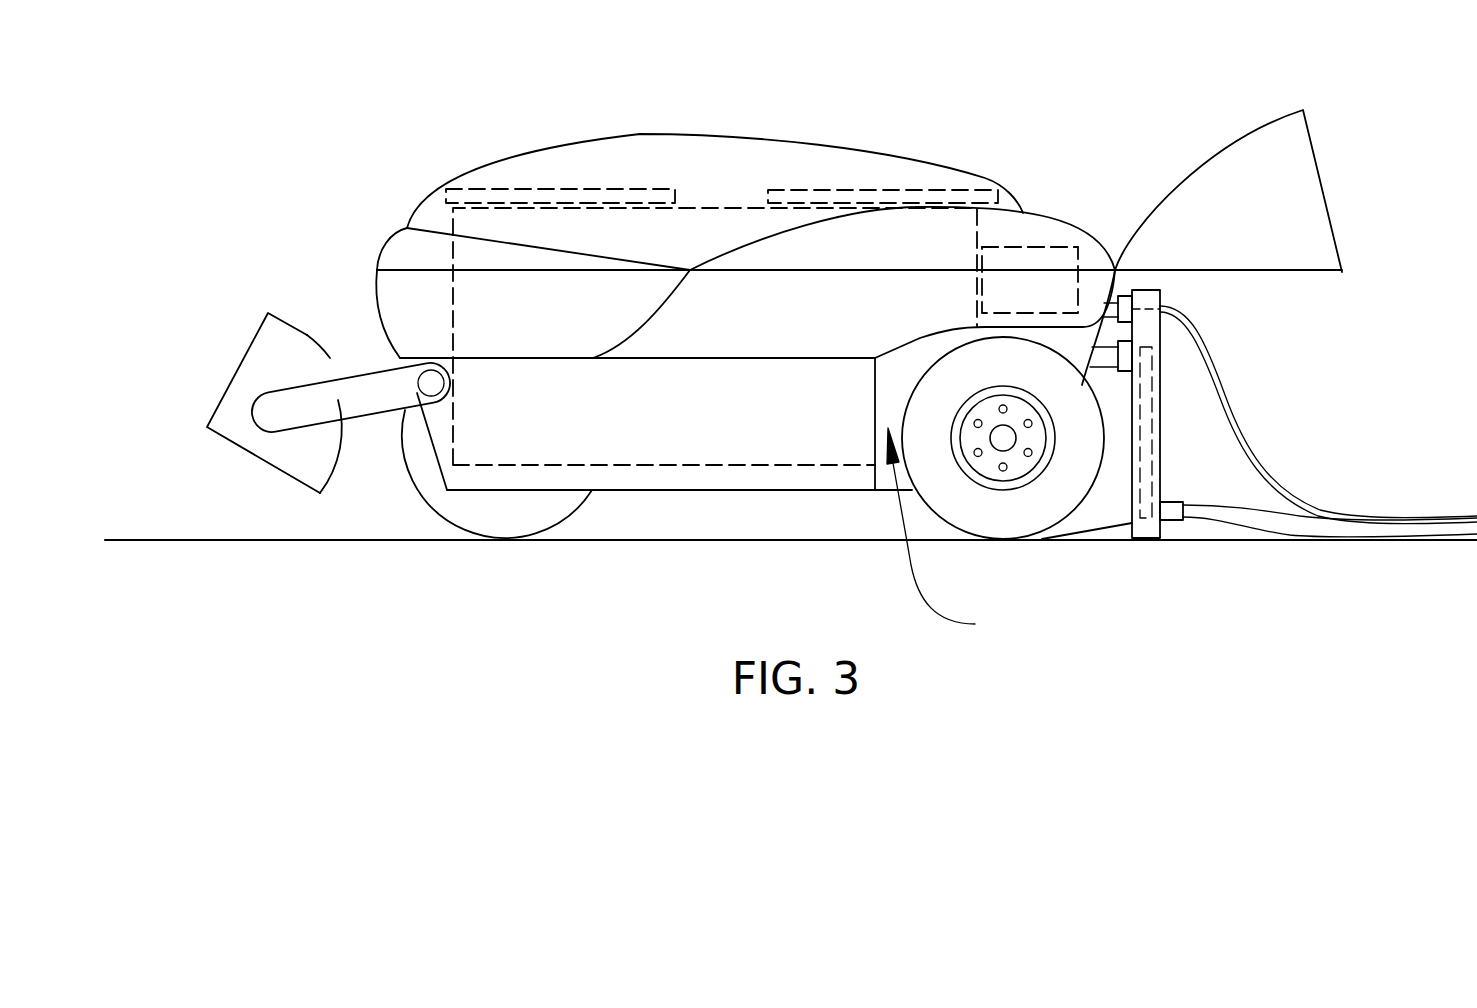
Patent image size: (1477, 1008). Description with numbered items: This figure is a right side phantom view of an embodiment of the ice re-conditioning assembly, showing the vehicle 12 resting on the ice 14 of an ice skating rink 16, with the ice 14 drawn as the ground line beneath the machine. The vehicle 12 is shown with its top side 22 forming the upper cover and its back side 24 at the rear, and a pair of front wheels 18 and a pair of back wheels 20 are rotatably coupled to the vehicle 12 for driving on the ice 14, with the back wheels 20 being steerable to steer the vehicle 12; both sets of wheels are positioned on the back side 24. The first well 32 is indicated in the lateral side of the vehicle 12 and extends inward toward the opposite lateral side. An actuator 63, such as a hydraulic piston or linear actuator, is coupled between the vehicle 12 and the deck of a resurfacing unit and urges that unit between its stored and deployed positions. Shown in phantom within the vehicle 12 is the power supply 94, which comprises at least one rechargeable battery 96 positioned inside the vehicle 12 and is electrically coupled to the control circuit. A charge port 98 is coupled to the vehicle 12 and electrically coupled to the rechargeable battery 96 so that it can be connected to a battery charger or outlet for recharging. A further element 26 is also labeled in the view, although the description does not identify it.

The vehicle 12 is at (1080, 228).
The ice 14 is at (172, 540).
The ice skating rink 16 is at (260, 517).
The front wheels 18 is at (1077, 507).
The back wheels 20 is at (428, 507).
The top side 22 is at (760, 134).
The back side 24 is at (377, 300).
The housing 26 is at (693, 228).
The first well 32 is at (952, 538).
The actuator 63 is at (417, 393).
The power supply 94 is at (1023, 246).
The rechargeable battery 96 is at (1002, 246).
The charge port 98 is at (1115, 292).